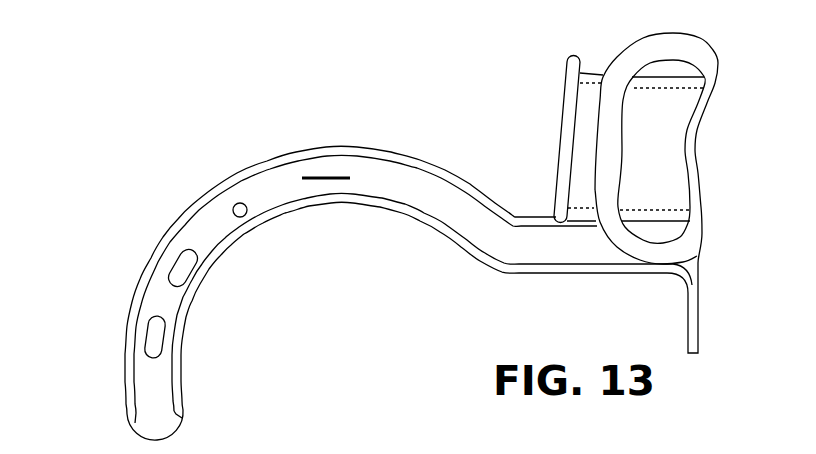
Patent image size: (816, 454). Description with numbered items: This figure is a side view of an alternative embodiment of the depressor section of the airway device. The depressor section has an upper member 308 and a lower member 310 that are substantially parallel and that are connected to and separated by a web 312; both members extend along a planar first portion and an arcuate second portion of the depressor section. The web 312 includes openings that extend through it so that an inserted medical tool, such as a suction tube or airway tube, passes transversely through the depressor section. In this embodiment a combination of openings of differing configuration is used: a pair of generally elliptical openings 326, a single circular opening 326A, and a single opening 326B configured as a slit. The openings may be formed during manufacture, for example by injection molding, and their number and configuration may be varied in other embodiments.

The upper member 308 is at (425, 165).
The lower member 310 is at (400, 210).
The web 312 is at (152, 377).
The openings 326 is at (184, 270).
The circular opening 326A is at (234, 204).
The slit opening 326B is at (330, 177).